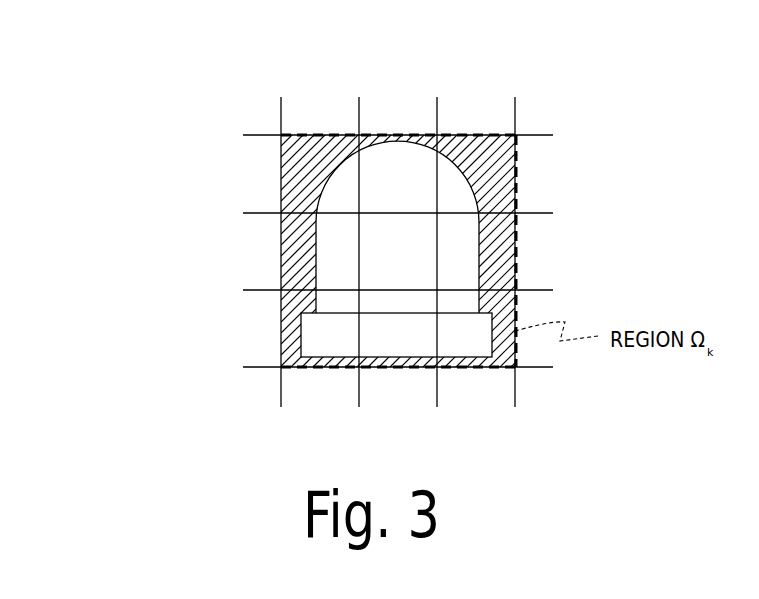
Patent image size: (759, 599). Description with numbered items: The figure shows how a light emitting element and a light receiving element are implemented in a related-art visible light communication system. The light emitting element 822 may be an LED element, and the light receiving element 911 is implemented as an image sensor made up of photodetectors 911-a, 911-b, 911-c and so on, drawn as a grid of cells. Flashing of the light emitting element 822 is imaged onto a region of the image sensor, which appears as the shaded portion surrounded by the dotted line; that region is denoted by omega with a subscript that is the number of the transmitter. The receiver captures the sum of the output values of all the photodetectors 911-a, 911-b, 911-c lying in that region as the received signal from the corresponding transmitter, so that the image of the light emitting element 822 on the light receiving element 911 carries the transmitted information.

The light receiving element 911 is at (242, 80).
The photodetector 911-a is at (302, 180).
The photodetector 911-b is at (300, 246).
The photodetector 911-c is at (293, 325).
The light emitting element 822 is at (455, 259).